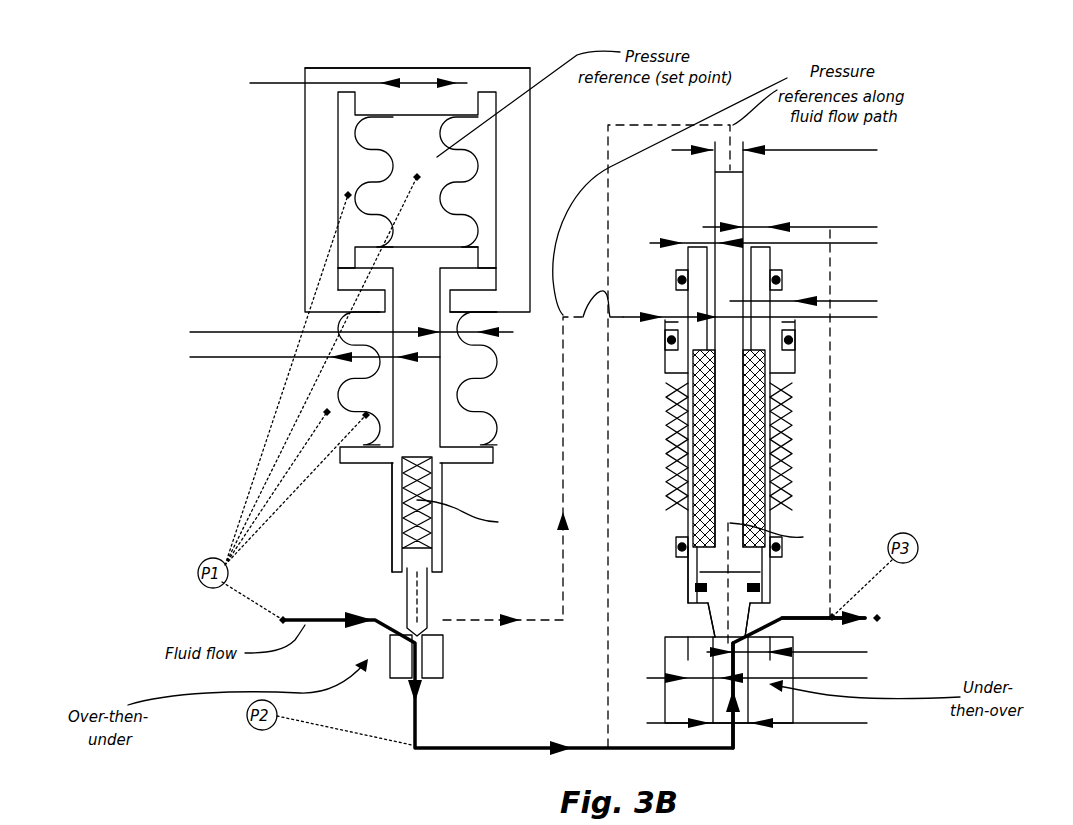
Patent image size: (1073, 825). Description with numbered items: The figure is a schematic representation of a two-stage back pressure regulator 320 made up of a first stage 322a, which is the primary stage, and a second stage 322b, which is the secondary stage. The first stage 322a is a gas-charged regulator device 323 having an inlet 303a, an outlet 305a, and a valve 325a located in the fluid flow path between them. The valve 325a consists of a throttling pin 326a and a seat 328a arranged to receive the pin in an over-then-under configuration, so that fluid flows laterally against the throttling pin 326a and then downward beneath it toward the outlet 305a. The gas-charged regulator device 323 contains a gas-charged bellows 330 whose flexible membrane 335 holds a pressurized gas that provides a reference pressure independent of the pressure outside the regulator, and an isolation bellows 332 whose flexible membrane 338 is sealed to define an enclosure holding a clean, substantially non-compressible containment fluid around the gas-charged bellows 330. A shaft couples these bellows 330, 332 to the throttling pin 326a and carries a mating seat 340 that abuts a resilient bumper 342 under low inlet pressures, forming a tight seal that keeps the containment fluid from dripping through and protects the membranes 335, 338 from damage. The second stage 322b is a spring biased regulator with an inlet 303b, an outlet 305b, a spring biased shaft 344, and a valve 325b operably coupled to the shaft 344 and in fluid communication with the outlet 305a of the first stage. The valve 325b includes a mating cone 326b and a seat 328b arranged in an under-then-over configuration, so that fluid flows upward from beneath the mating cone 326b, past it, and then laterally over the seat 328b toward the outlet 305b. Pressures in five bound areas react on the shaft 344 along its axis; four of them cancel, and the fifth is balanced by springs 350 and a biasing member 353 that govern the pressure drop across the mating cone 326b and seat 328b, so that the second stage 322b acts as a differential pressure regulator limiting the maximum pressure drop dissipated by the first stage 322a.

The two-stage back pressure regulator 320 is at (177, 126).
The first stage 322a is at (547, 40).
The second stage 322b is at (863, 42).
The gas-charged regulator device 323 is at (322, 190).
The valve 325a is at (381, 594).
The valve 325b is at (670, 611).
The throttling pin 326a is at (427, 585).
The mating cone 326b is at (732, 605).
The seat 328a is at (435, 652).
The seat 328b is at (683, 690).
The gas-charged bellows 330 is at (378, 150).
The isolation bellows 332 is at (465, 400).
The flexible membrane 335 is at (478, 207).
The flexible membrane 338 is at (490, 383).
The mating seat 340 is at (366, 264).
The resilient bumper 342 is at (462, 290).
The spring biased shaft 344 is at (733, 448).
The springs 350 is at (787, 487).
The biasing member 353 is at (763, 463).
The inlet 303a is at (266, 628).
The inlet 303b is at (725, 758).
The outlet 305a is at (424, 682).
The outlet 305b is at (893, 619).